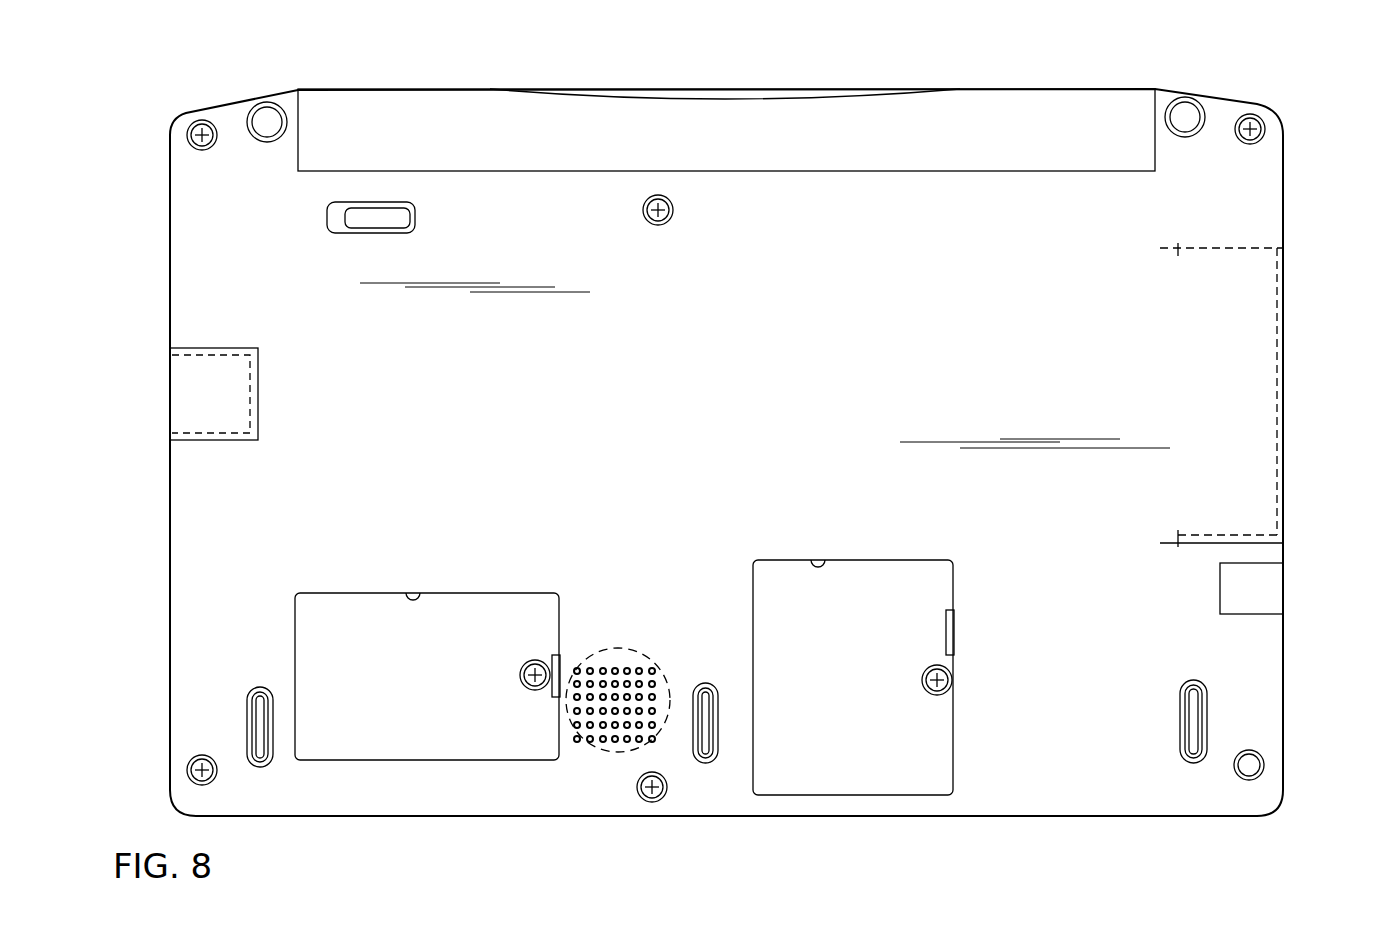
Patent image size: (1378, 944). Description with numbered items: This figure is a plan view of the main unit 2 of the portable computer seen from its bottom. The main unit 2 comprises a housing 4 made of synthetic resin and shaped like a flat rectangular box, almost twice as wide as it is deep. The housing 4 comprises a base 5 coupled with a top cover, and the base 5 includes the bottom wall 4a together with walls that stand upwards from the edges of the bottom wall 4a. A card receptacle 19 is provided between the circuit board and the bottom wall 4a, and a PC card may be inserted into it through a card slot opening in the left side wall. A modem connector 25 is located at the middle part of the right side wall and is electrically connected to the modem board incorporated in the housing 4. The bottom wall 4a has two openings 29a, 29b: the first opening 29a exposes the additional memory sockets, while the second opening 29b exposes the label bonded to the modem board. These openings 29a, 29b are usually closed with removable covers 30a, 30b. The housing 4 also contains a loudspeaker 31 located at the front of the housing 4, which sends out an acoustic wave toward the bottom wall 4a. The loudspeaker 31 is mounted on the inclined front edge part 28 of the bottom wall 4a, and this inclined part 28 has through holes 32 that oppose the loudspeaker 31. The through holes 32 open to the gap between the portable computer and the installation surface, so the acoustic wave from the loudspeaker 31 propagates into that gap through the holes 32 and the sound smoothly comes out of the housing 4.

The main unit 2 is at (744, 428).
The housing 4 is at (1267, 167).
The bottom wall 4a is at (1068, 806).
The base 5 is at (200, 582).
The card receptacle 19 is at (1250, 413).
The modem connector 25 is at (233, 402).
The inclined front edge part 28 is at (185, 253).
The first opening 29a is at (822, 560).
The second opening 29b is at (417, 593).
The removable cover 30a is at (930, 728).
The removable cover 30b is at (524, 607).
The loudspeaker 31 is at (637, 656).
The through holes 32 is at (578, 740).